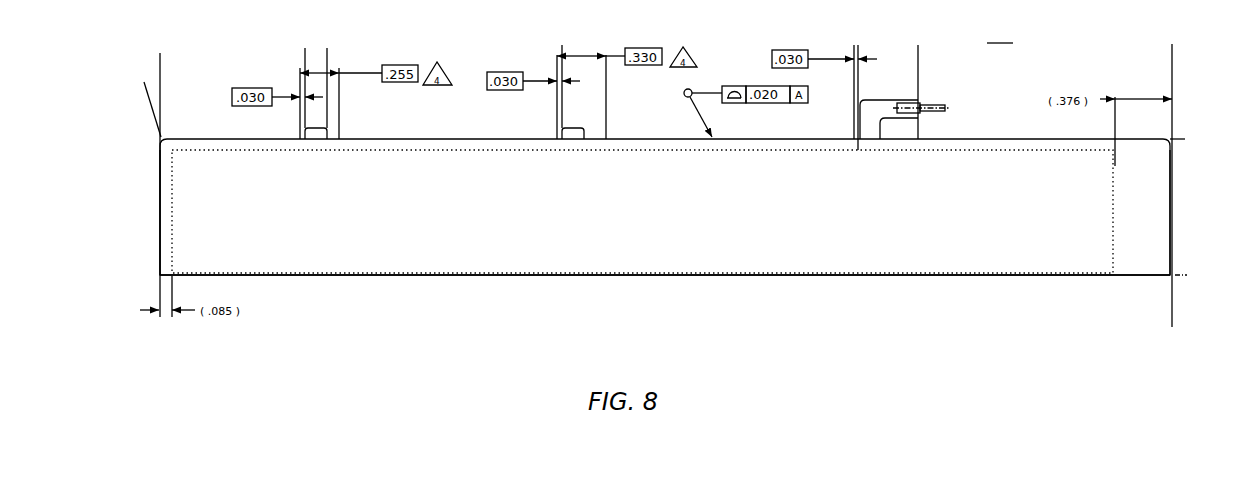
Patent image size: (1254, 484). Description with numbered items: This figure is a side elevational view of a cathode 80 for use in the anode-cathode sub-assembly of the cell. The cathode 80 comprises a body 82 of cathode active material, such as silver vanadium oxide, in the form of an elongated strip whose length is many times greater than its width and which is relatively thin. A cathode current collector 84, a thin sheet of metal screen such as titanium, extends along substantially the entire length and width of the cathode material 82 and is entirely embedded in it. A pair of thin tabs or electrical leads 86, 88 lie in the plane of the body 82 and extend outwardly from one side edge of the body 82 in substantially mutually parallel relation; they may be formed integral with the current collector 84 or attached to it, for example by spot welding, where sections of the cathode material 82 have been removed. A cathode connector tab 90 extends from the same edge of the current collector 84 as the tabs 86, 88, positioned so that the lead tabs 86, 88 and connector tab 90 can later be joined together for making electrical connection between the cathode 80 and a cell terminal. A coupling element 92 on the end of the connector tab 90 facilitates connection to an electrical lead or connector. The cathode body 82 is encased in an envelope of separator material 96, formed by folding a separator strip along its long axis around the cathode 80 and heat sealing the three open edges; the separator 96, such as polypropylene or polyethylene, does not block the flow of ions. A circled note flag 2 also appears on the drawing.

The cathode 80 is at (1030, 98).
The body of cathode active material 82 is at (165, 245).
The cathode current collector 84 is at (550, 240).
The tab 86 is at (314, 134).
The tab 88 is at (578, 128).
The cathode connector tab 90 is at (890, 45).
The coupling element 92 is at (927, 101).
The envelope of separator material 96 is at (388, 259).
The note flag 2 is at (981, 101).